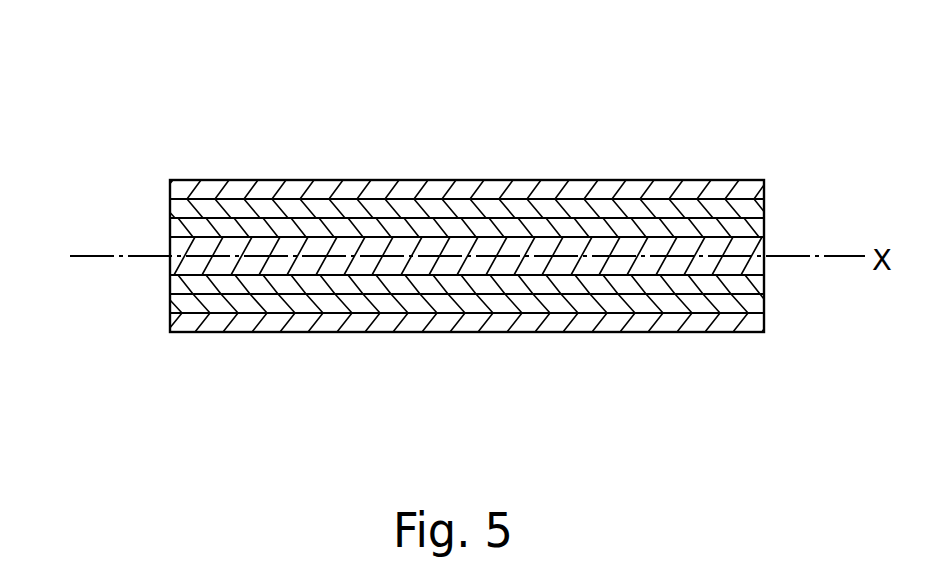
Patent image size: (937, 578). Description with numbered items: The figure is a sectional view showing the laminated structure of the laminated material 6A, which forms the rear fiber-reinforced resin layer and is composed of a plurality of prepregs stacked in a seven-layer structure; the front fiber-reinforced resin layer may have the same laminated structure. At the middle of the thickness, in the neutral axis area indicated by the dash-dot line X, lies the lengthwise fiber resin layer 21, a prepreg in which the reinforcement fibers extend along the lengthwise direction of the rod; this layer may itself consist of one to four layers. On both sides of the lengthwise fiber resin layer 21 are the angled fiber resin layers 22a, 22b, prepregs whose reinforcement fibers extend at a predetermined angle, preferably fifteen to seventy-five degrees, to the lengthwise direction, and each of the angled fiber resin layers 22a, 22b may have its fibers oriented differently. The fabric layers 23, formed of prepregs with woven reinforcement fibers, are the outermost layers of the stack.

The laminated material 6A is at (640, 123).
The lengthwise fiber resin layer 21 is at (752, 251).
The angled fiber resin layer 22a is at (515, 223).
The angled fiber resin layer 22b is at (173, 208).
The fabric layer 23 is at (380, 180).